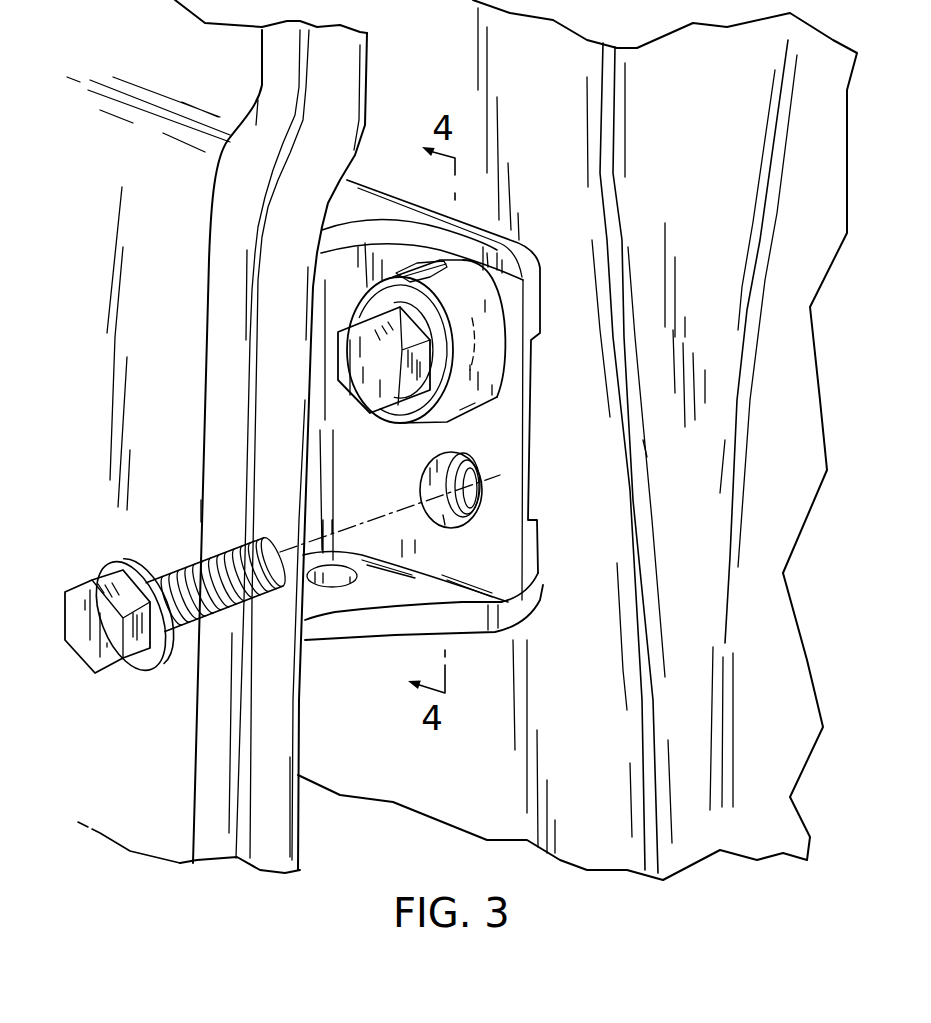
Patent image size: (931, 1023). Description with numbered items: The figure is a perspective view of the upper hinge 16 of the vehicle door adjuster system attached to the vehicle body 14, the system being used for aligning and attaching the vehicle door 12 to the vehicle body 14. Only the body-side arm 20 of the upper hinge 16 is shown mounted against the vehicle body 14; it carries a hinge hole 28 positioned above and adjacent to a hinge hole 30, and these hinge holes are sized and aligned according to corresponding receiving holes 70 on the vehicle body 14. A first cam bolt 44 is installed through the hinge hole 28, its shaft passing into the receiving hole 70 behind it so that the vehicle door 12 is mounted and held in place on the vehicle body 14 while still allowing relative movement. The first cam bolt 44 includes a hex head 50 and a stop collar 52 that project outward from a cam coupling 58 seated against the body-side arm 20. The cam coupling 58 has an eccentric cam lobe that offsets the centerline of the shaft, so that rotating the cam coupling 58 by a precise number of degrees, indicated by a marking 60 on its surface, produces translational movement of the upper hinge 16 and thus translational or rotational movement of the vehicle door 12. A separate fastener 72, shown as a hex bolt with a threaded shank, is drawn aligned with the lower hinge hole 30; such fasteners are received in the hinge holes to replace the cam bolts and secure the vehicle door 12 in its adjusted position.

The vehicle door 12 is at (172, 264).
The vehicle body 14 is at (623, 845).
The upper hinge 16 is at (473, 647).
The body-side arm 20 is at (502, 565).
The hinge hole 28 is at (465, 313).
The hinge hole 30 is at (478, 512).
The first cam bolt 44 is at (368, 422).
The hex head 50 is at (338, 357).
The stop collar 52 is at (382, 305).
The cam coupling 58 is at (493, 372).
The marking 60 is at (427, 266).
The receiving hole 70 is at (482, 487).
The fastener 72 is at (110, 660).